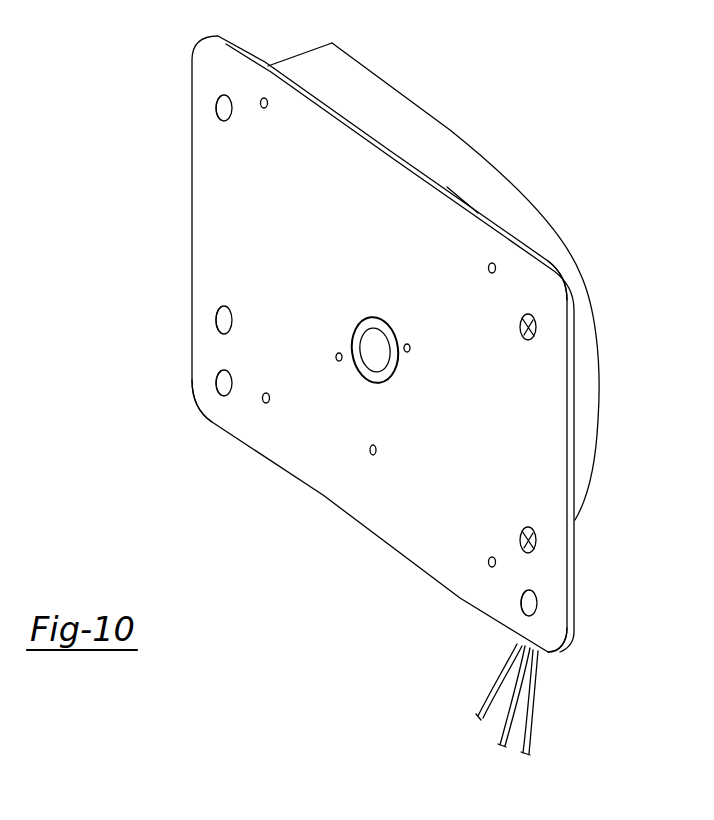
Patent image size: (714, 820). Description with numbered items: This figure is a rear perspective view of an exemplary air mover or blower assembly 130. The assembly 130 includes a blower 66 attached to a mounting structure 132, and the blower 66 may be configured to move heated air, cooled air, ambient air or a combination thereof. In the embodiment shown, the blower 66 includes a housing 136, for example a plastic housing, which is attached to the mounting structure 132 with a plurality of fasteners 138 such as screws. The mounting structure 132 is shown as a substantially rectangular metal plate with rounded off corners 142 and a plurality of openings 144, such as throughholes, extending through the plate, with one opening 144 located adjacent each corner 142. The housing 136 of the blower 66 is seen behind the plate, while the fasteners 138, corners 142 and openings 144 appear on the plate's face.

The blower assembly 130 is at (162, 137).
The blower 66 is at (462, 120).
The housing 136 is at (383, 82).
The mounting structure 132 is at (401, 279).
The fasteners 138 is at (261, 107).
The rounded off corners 142 is at (558, 283).
The openings 144 is at (216, 104).